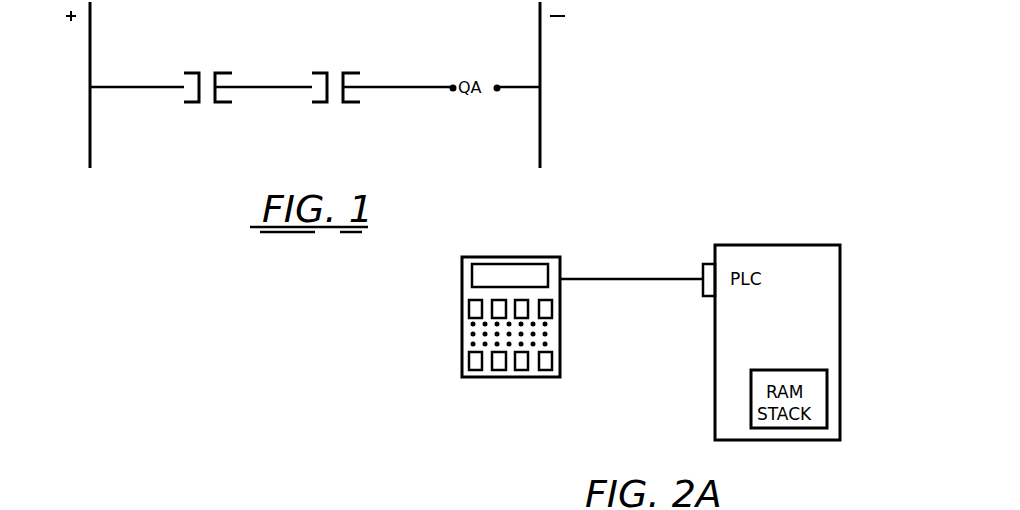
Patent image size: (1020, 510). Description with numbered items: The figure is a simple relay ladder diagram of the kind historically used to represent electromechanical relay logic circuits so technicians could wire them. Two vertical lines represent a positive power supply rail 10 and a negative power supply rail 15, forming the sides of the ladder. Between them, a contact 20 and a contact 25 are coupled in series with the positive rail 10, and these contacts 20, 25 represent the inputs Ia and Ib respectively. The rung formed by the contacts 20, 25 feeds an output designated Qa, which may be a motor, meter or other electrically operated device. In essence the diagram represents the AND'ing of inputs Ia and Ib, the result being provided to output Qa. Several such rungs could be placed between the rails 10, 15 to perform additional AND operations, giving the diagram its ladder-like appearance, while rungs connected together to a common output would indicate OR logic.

The positive power supply rail 10 is at (90, 143).
The negative power supply rail 15 is at (540, 139).
The contact 20 is at (207, 72).
The contact 25 is at (336, 72).